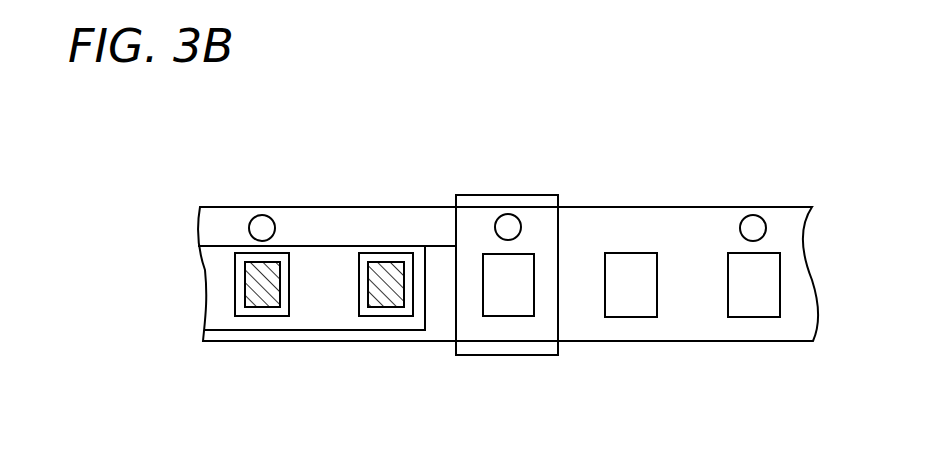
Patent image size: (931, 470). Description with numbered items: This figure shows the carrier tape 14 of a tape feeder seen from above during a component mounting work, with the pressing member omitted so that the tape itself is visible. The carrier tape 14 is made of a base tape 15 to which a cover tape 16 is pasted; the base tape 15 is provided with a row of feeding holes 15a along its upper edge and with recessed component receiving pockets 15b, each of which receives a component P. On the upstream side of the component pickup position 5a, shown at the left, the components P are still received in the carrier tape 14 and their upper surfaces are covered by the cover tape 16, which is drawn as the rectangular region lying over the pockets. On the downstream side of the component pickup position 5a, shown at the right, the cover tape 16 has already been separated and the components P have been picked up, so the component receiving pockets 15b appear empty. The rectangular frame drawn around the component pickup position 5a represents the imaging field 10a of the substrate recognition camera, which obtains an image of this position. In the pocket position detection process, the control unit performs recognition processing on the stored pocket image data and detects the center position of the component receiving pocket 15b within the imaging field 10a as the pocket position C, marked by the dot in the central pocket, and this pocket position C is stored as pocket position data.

The carrier tape 14 is at (176, 278).
The base tape 15 is at (215, 217).
The feeding holes 15a is at (269, 217).
The component receiving pockets 15b is at (287, 252).
The cover tape 16 is at (223, 320).
The component P is at (378, 305).
The pocket position C is at (508, 283).
The component pickup position 5a is at (537, 170).
The imaging field 10a is at (560, 353).